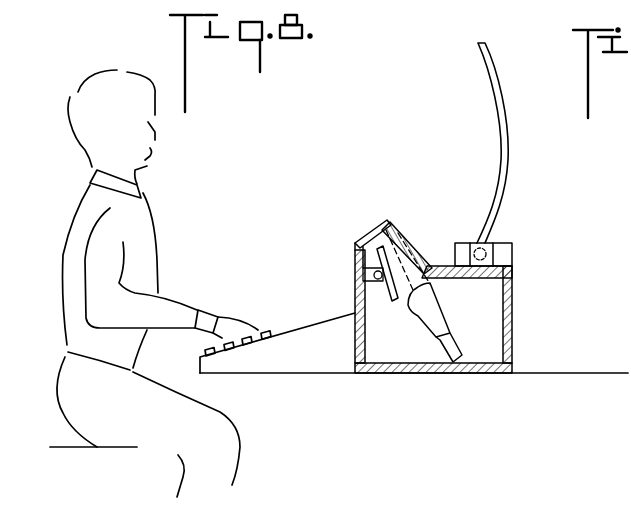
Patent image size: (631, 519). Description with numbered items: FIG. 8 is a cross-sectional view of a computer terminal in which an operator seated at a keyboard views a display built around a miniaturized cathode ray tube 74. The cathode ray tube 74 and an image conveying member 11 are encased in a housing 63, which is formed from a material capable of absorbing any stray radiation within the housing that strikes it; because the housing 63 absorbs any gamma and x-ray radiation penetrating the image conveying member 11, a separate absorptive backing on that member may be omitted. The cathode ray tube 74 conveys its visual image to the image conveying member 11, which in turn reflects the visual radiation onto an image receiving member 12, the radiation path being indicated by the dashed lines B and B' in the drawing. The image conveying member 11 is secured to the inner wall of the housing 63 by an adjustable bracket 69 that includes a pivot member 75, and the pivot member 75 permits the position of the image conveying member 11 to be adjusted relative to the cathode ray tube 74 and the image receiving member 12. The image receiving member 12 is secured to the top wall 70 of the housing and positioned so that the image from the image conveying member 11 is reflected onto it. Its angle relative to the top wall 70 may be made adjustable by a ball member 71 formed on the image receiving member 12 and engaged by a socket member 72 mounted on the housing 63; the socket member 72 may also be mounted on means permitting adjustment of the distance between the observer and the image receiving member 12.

The image conveying member 11 is at (395, 304).
The image receiving member 12 is at (505, 98).
The housing 63 is at (513, 315).
The adjustable bracket 69 is at (373, 242).
The top wall 70 is at (512, 263).
The ball member 71 is at (484, 247).
The socket member 72 is at (509, 250).
The cathode ray tube 74 is at (430, 326).
The pivot member 75 is at (380, 283).
The light beam B is at (407, 230).
The reflected beam B' is at (416, 260).